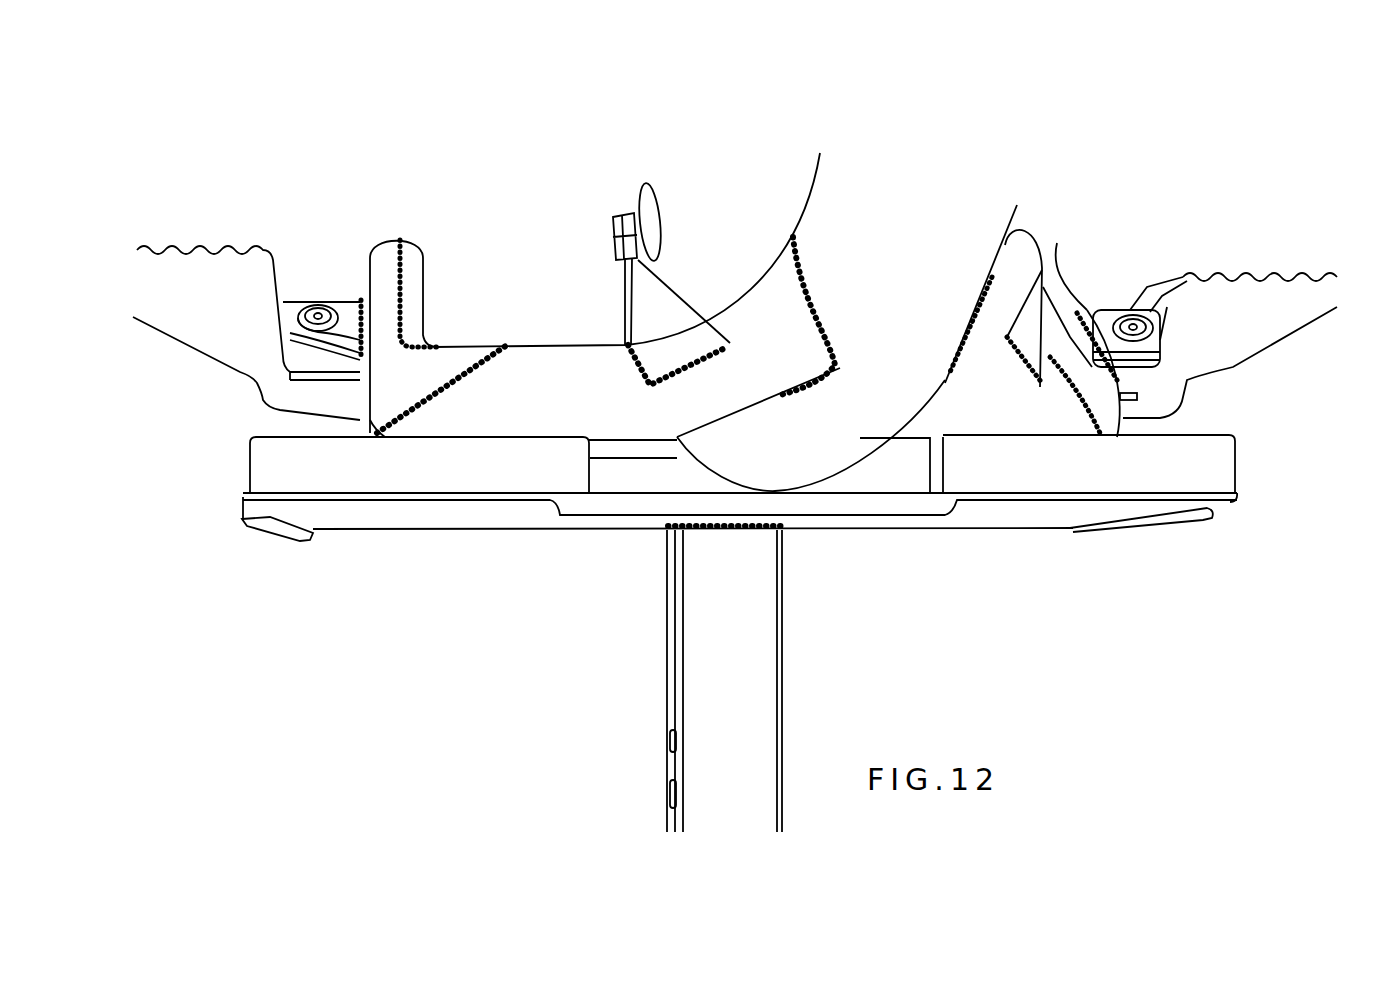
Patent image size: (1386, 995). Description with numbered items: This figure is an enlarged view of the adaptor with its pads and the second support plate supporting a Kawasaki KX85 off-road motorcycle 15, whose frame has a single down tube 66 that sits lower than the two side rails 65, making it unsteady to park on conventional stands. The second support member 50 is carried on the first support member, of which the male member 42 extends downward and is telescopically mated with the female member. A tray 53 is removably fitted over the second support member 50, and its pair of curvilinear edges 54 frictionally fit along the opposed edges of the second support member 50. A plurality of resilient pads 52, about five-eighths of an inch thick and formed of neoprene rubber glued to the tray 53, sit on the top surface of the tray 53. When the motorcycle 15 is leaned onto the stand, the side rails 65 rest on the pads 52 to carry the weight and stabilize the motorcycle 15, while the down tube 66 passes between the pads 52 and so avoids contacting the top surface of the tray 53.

The off-road motorcycle 15 is at (568, 302).
The male member 42 is at (697, 647).
The second support member 50 is at (507, 525).
The pad 52 is at (447, 467).
The tray 53 is at (893, 500).
The curvilinear edges 54 is at (273, 530).
The side rails 65 is at (480, 427).
The down tube 66 is at (797, 463).